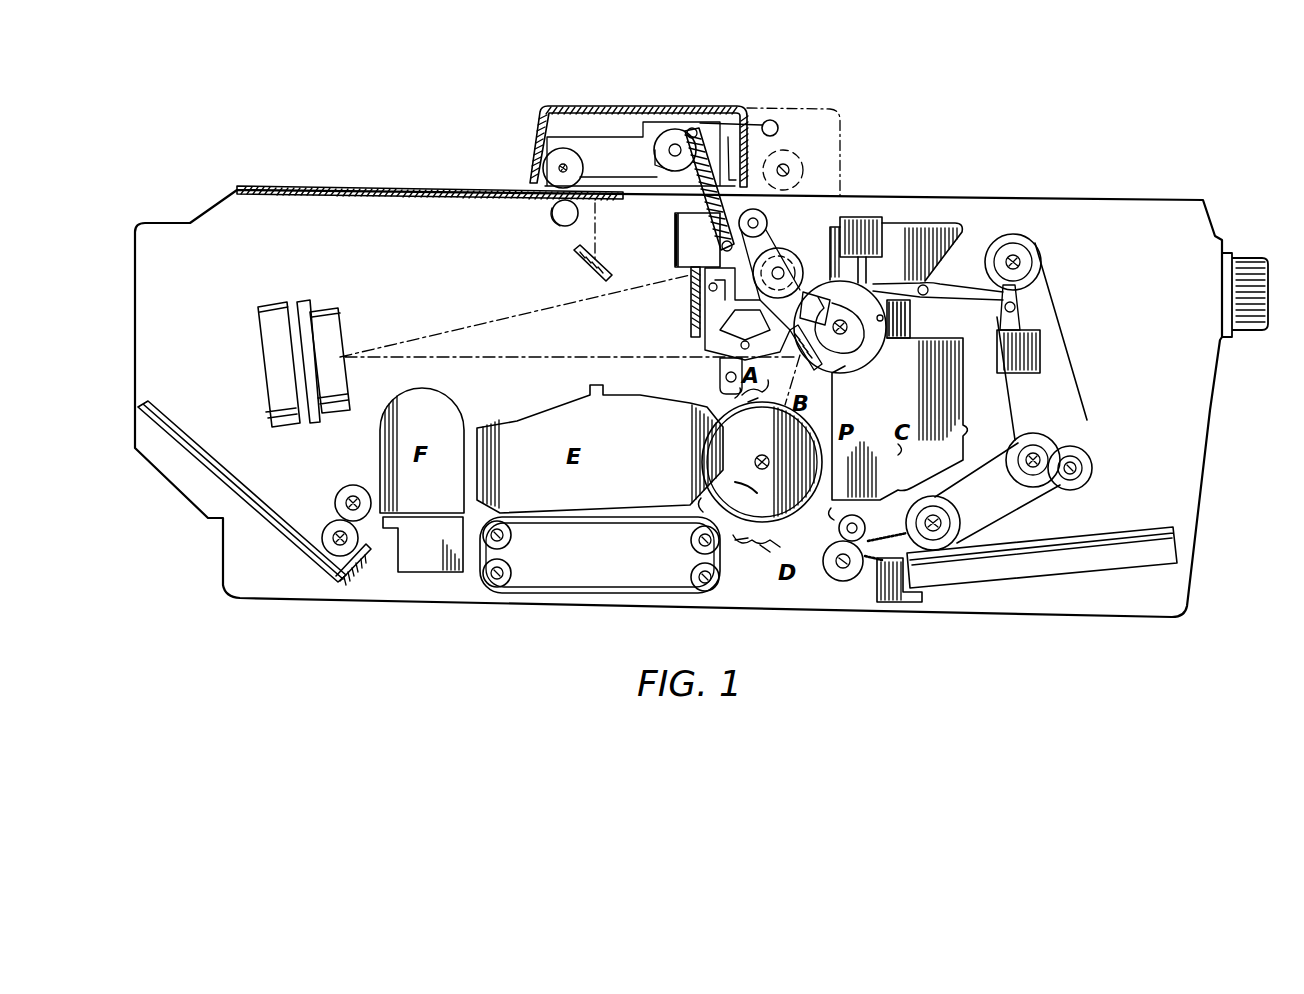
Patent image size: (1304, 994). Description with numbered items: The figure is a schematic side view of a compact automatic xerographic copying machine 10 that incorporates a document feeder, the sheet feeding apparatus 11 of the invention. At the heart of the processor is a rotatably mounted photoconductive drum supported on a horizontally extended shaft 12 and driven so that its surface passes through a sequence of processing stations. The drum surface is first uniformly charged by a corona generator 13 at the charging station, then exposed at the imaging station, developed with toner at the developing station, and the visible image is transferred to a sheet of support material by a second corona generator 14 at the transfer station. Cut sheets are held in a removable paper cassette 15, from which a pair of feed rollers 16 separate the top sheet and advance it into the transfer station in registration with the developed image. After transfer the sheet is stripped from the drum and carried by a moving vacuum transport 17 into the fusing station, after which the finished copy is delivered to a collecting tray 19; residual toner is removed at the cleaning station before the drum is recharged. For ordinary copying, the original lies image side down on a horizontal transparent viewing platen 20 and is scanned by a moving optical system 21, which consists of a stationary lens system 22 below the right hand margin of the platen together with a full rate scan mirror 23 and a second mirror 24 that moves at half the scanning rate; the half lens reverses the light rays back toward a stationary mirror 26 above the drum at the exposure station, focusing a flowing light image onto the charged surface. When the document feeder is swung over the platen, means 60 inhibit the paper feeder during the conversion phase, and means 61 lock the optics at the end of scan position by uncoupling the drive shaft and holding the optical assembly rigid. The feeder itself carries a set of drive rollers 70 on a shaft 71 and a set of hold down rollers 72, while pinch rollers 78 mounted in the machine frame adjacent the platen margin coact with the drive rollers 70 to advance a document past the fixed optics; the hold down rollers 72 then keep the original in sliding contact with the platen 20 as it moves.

The xerographic copying machine 10 is at (942, 194).
The sheet feeding apparatus 11 is at (640, 103).
The shaft 12 is at (755, 460).
The corona generator 13 is at (763, 378).
The second corona generator 14 is at (766, 536).
The paper cassette 15 is at (1045, 580).
The feed rollers 16 is at (960, 533).
The vacuum transport 17 is at (552, 520).
The collecting tray 19 is at (188, 443).
The viewing platen 20 is at (358, 187).
The optical system 21 is at (268, 298).
The lens system 22 is at (320, 308).
The full rate scan mirror 23 is at (576, 265).
The second mirror 24 is at (690, 310).
The stationary mirror 26 is at (833, 392).
The inhibiting means 60 is at (1050, 282).
The locking means 61 is at (863, 340).
The drive rollers 70 is at (720, 160).
The shaft 71 is at (660, 164).
The hold down rollers 72 is at (548, 167).
The pinch rollers 78 is at (688, 208).